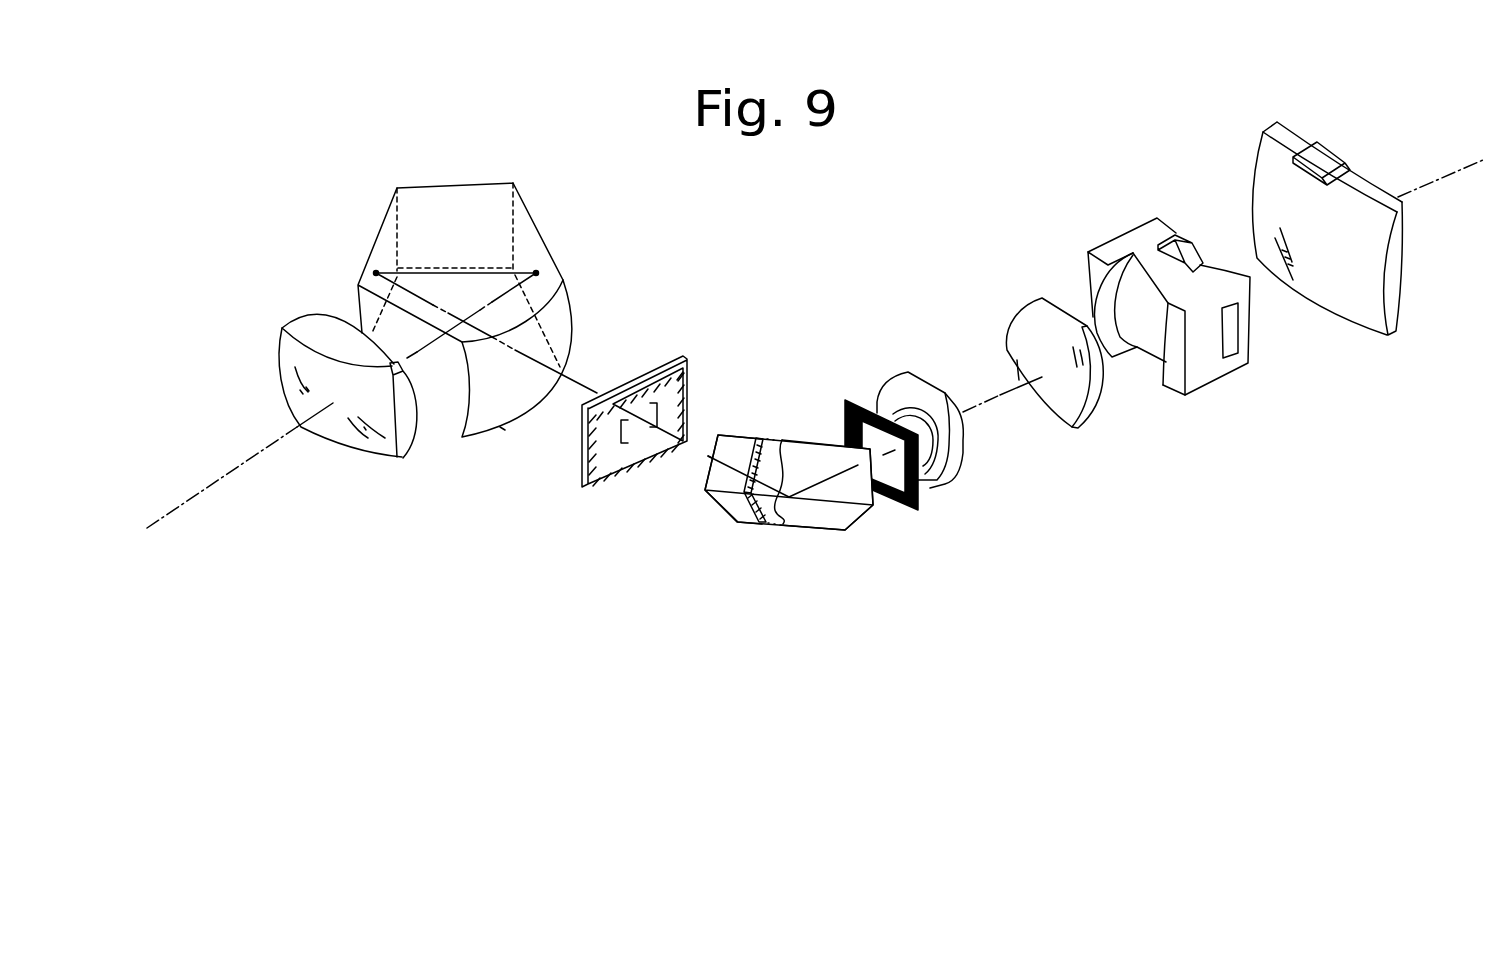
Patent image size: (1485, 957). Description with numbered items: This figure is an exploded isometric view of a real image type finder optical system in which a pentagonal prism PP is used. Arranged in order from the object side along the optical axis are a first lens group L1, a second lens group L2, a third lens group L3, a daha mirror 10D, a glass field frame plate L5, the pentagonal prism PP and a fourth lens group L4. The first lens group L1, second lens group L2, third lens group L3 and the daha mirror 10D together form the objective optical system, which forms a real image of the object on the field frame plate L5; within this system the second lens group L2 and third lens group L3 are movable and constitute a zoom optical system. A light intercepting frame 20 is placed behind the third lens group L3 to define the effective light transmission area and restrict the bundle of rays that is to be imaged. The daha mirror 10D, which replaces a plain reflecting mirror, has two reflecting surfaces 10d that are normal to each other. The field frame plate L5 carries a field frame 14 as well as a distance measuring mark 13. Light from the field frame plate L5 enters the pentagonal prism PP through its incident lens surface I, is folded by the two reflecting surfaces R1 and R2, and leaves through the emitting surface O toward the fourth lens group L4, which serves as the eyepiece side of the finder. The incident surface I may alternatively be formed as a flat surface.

The pentagonal prism PP is at (558, 193).
The reflecting surface R1 is at (374, 229).
The reflecting surface R2 is at (556, 264).
The emitting surface O is at (699, 447).
The incident lens surface I is at (514, 407).
The fourth lens group L4 is at (377, 462).
The glass field frame plate L5 is at (688, 389).
The distance measuring mark 13 is at (670, 379).
The field frame 14 is at (603, 481).
The light intercepting frame 20 is at (851, 402).
The daha mirror 10D is at (800, 524).
The reflecting surfaces 10d is at (715, 500).
The third lens group L3 is at (927, 476).
The second lens group L2 is at (1092, 462).
The first lens group L1 is at (1347, 313).